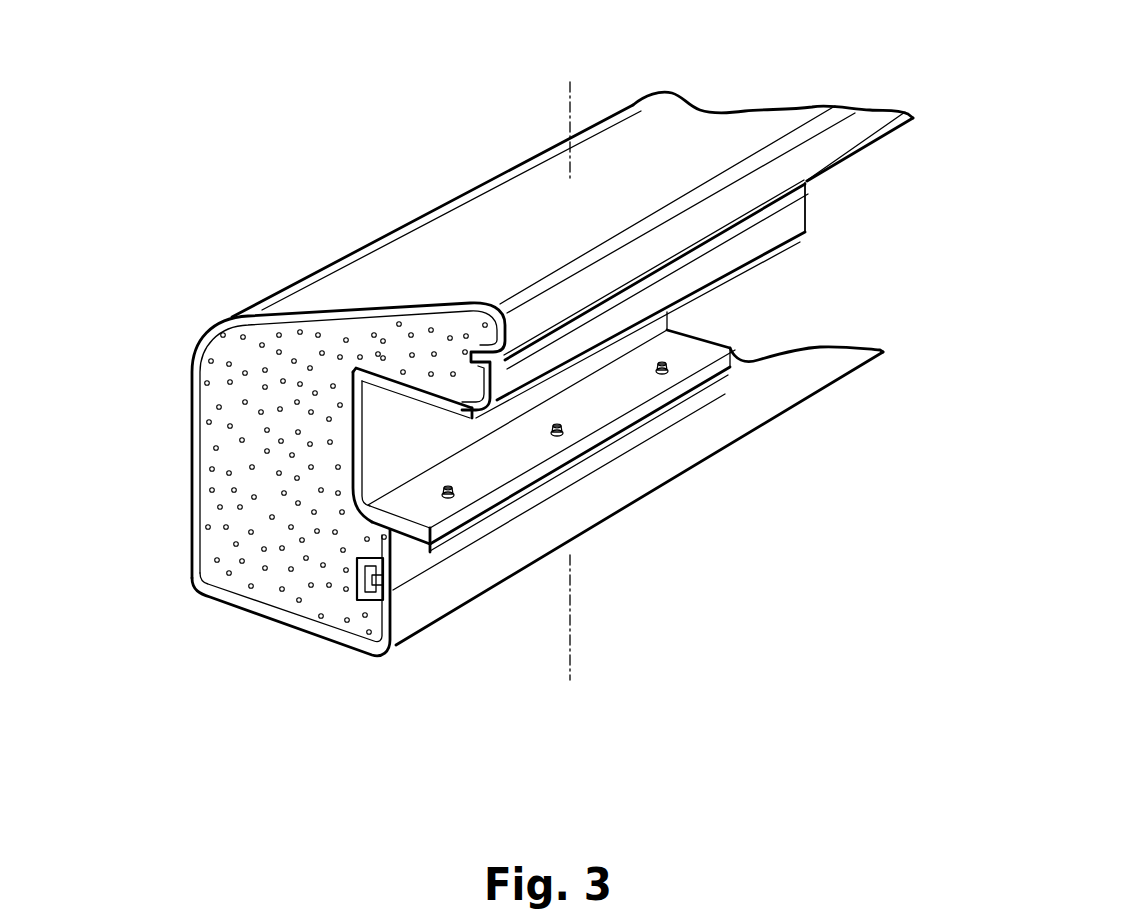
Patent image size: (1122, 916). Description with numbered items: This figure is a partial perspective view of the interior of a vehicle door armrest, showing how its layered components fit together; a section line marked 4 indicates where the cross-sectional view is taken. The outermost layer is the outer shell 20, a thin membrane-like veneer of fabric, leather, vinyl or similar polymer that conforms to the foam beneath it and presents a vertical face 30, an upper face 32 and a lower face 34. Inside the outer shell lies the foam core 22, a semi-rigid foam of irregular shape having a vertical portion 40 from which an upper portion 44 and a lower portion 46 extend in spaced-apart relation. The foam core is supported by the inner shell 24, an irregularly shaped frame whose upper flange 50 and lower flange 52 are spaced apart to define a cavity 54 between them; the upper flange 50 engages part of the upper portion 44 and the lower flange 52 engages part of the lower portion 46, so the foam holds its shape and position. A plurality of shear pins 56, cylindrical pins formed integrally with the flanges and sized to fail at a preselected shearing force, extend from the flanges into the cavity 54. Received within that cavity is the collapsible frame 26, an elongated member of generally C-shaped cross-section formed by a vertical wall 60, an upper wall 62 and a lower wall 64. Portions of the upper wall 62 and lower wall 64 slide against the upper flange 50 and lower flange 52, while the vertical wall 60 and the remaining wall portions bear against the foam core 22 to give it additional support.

The outer shell 20 is at (572, 217).
The foam core 22 is at (282, 447).
The inner shell 24 is at (812, 214).
The collapsible frame 26 is at (495, 475).
The vertical face 30 is at (193, 500).
The upper face 32 is at (500, 213).
The lower face 34 is at (247, 612).
The vertical portion 40 is at (232, 512).
The upper portion 44 is at (400, 360).
The lower portion 46 is at (348, 618).
The upper flange 50 is at (427, 387).
The lower flange 52 is at (437, 515).
The cavity 54 is at (386, 456).
The shear pins 56 is at (668, 377).
The vertical wall 60 is at (660, 323).
The upper wall 62 is at (447, 410).
The lower wall 64 is at (417, 527).
The section line 4- 4 is at (570, 82).